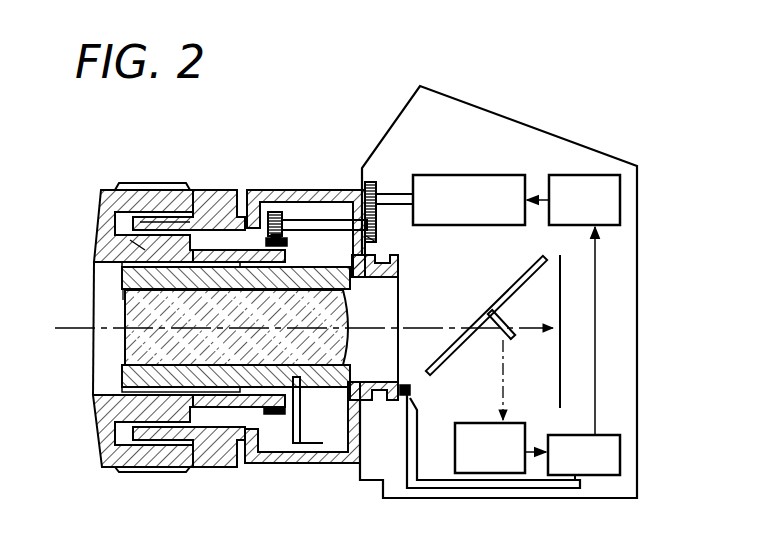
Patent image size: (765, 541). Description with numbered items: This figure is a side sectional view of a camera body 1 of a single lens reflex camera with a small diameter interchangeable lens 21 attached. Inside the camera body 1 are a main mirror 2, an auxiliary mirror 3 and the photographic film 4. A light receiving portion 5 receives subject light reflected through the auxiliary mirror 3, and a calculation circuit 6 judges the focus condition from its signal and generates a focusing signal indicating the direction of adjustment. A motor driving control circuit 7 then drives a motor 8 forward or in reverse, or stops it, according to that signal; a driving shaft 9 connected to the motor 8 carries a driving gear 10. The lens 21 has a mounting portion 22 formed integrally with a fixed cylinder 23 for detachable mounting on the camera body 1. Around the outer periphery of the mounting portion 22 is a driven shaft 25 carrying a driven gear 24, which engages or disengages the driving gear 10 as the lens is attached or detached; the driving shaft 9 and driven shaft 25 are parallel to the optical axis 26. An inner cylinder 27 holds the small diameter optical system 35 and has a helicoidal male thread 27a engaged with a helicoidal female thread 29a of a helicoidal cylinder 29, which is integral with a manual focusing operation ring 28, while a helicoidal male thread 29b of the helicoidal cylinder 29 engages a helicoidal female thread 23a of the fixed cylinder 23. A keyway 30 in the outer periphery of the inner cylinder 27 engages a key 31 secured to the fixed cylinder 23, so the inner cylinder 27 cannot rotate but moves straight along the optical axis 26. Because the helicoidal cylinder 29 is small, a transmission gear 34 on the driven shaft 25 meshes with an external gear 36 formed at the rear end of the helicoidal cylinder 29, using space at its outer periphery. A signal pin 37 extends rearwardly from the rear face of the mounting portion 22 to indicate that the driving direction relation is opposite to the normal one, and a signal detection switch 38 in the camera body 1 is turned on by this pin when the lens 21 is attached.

The camera body 1 is at (580, 136).
The main mirror 2 is at (516, 283).
The auxiliary mirror 3 is at (506, 323).
The photographic film 4 is at (558, 379).
The light receiving portion 5 is at (478, 462).
The calculation circuit 6 is at (573, 469).
The motor driving control circuit 7 is at (573, 214).
The motor 8 is at (458, 214).
The driving shaft 9 is at (390, 193).
The driving gear 10 is at (373, 182).
The interchangeable lens 21 is at (96, 197).
The mounting portion 22 is at (393, 270).
The fixed cylinder 23 is at (307, 192).
The helicoidal female thread 23a is at (135, 246).
The driven gear 24 is at (375, 238).
The driven shaft 25 is at (338, 226).
The optical axis 26 is at (66, 330).
The inner cylinder 27 is at (123, 283).
The helicoidal male thread 27a is at (127, 263).
The manual focusing operation ring 28 is at (203, 197).
The helicoidal cylinder 29 is at (226, 255).
The helicoidal female thread 29a is at (123, 295).
The helicoidal male thread 29b is at (140, 222).
The keyway 30 is at (323, 378).
The key 31 is at (300, 441).
The transmission gear 34 is at (273, 211).
The optical system 35 is at (330, 350).
The external gear 36 is at (288, 241).
The signal pin 37 is at (402, 385).
The signal detection switch 38 is at (418, 432).